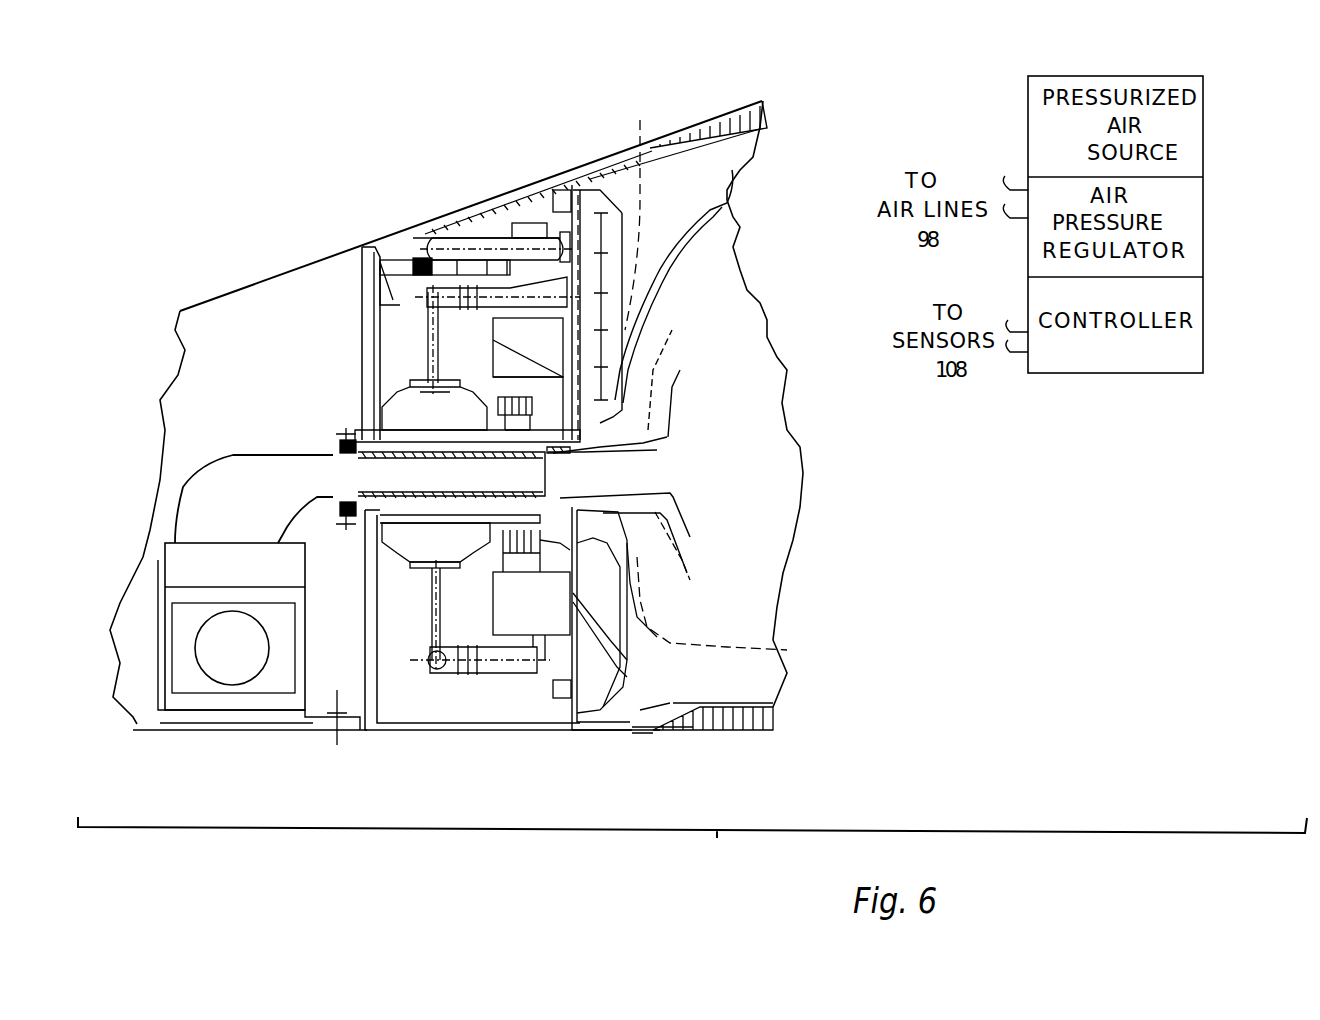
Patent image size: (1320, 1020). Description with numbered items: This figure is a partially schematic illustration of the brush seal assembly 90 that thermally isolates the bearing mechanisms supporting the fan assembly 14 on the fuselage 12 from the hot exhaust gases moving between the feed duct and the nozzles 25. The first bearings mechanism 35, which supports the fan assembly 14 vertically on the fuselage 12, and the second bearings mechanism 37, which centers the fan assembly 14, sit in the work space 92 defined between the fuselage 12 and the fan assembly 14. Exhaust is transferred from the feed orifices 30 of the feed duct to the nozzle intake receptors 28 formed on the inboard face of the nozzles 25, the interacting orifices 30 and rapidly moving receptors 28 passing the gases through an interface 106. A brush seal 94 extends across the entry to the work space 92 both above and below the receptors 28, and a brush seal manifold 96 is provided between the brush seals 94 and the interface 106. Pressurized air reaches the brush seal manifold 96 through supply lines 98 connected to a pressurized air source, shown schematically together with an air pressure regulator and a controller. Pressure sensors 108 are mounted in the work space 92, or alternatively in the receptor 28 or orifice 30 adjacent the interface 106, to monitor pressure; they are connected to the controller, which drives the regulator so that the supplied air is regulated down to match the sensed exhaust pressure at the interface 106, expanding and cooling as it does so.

The fuselage 12 is at (683, 123).
The fan assembly 14 is at (237, 732).
The nozzle 25 is at (257, 672).
The nozzle intake receptor 28 is at (444, 485).
The feed orifice 30 is at (687, 520).
The first bearings mechanism 35 is at (385, 353).
The second bearings mechanism 37 is at (417, 193).
The brush seal assembly 90 is at (707, 330).
The work space 92 is at (400, 325).
The brush seal 94 is at (505, 392).
The brush seal manifold 96 is at (556, 400).
The supply line 98 is at (660, 300).
The interface 106 is at (560, 480).
The pressure sensor 108 is at (553, 200).